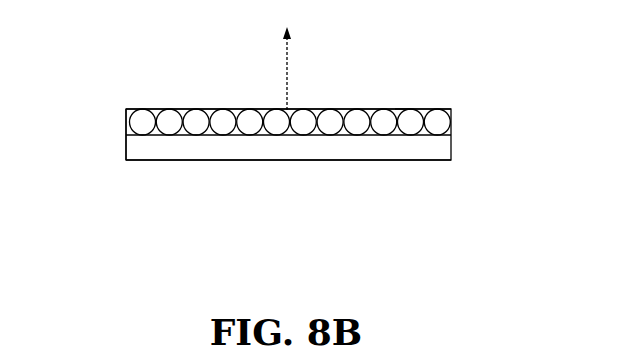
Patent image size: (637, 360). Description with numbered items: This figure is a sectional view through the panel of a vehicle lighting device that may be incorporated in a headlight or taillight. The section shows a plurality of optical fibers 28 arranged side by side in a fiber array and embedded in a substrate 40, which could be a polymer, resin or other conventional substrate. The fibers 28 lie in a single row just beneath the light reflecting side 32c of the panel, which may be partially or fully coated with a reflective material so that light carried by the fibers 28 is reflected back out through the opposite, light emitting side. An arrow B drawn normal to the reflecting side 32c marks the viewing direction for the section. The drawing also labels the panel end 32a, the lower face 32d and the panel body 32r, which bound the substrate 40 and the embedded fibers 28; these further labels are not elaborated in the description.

The optical fibers 28 is at (250, 127).
The first end of frame 32a is at (127, 124).
The light reflecting side 32c is at (258, 110).
The bottom surface of frame 32d is at (263, 135).
The frame 32r is at (441, 150).
The substrate 40 is at (400, 108).
The direction arrow B is at (290, 52).